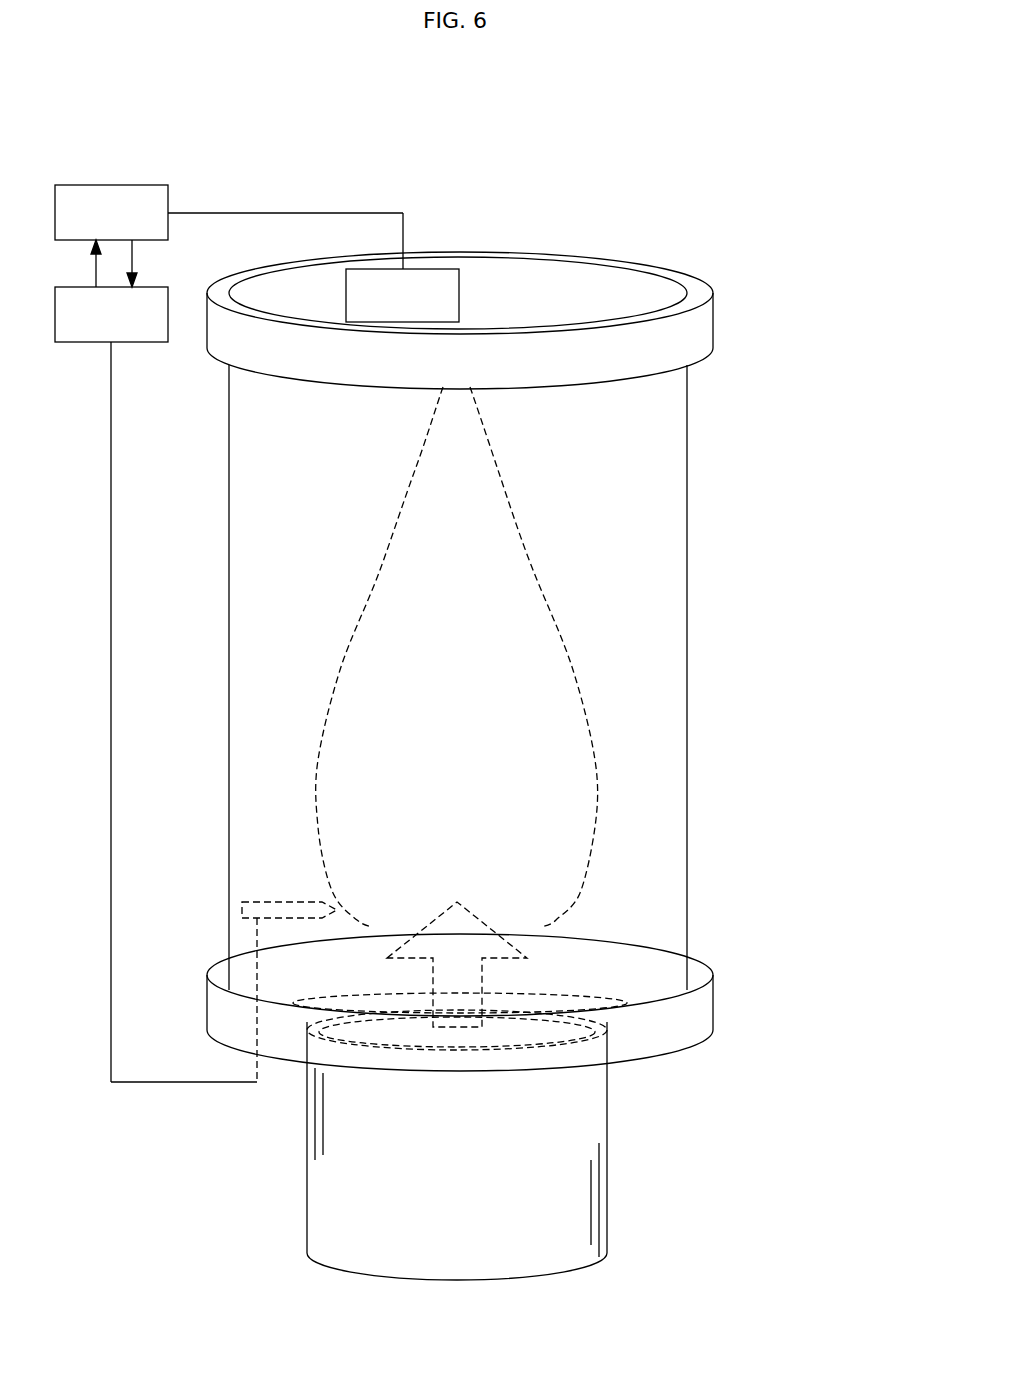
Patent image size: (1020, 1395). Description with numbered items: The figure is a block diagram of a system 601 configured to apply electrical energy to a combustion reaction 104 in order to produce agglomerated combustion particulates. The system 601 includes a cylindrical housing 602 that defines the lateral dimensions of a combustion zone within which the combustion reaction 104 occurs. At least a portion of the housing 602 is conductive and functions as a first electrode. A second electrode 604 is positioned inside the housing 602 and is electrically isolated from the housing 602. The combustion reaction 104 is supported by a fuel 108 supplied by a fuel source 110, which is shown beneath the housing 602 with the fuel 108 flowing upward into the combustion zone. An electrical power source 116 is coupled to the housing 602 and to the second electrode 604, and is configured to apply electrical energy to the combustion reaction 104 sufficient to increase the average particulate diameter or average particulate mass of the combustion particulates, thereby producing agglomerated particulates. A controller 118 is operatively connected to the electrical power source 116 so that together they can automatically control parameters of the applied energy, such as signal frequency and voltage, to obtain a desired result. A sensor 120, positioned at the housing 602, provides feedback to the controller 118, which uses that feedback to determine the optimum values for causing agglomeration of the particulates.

The system 601 is at (689, 168).
The cylindrical housing 602 is at (688, 643).
The combustion reaction 104 is at (475, 774).
The fuel 108 is at (540, 940).
The second electrode 604 is at (244, 992).
The fuel source 110 is at (607, 1120).
The controller 118 is at (56, 185).
The electrical power source 116 is at (57, 342).
The sensor 120 is at (456, 269).